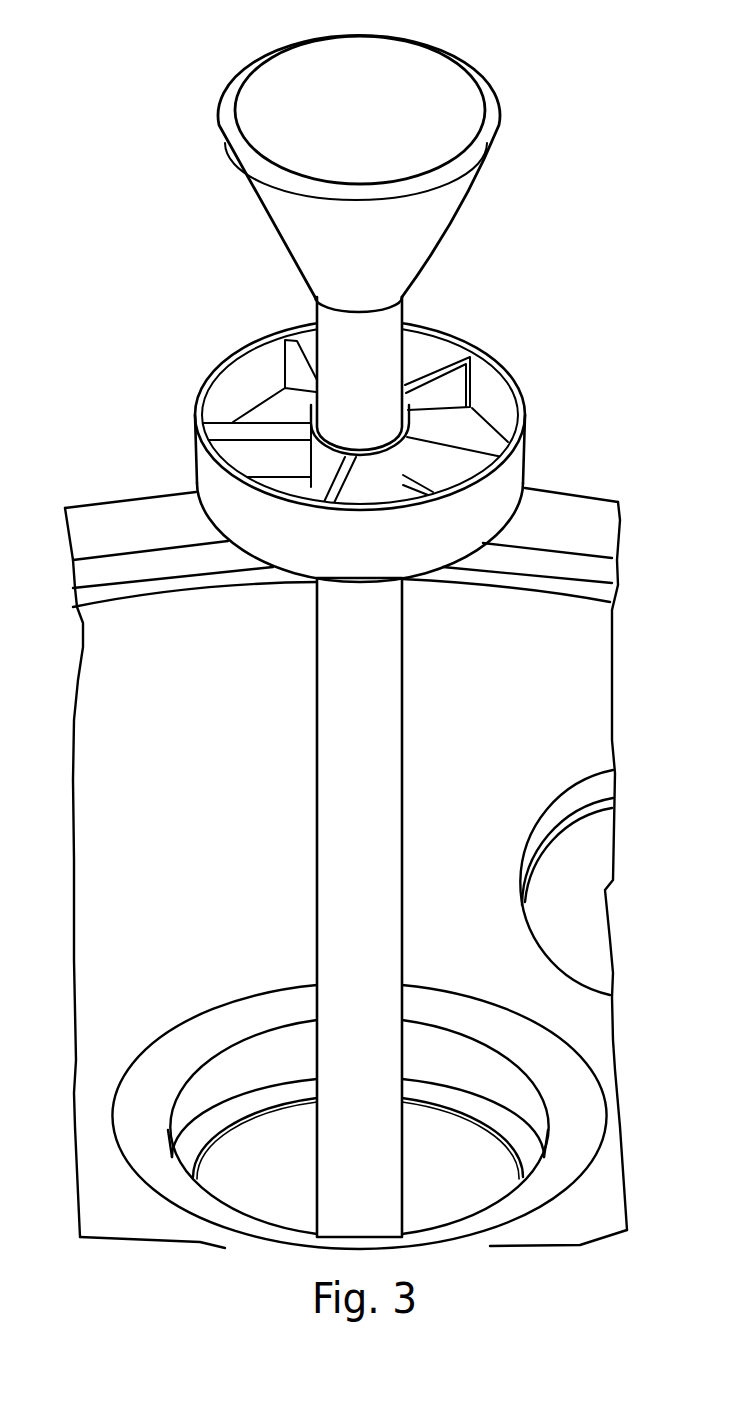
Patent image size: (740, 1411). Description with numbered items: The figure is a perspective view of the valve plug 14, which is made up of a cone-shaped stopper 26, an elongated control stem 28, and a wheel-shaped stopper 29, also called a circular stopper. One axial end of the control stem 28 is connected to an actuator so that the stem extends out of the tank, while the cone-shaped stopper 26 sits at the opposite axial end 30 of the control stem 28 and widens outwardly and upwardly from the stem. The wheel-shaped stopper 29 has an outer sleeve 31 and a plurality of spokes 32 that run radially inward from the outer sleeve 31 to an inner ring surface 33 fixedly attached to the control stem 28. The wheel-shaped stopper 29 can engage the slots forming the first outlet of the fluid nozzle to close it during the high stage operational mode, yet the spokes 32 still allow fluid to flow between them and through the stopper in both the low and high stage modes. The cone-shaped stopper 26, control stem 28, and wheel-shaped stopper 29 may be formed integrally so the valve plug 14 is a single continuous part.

The valve plug 14 is at (265, 93).
The cone-shaped stopper 26 is at (283, 218).
The elongated control stem 28 is at (327, 743).
The wheel-shaped stopper 29 is at (208, 473).
The opposite axial end 30 is at (373, 298).
The outer sleeve 31 is at (228, 382).
The spokes 32 is at (235, 440).
The inner ring surface 33 is at (313, 427).